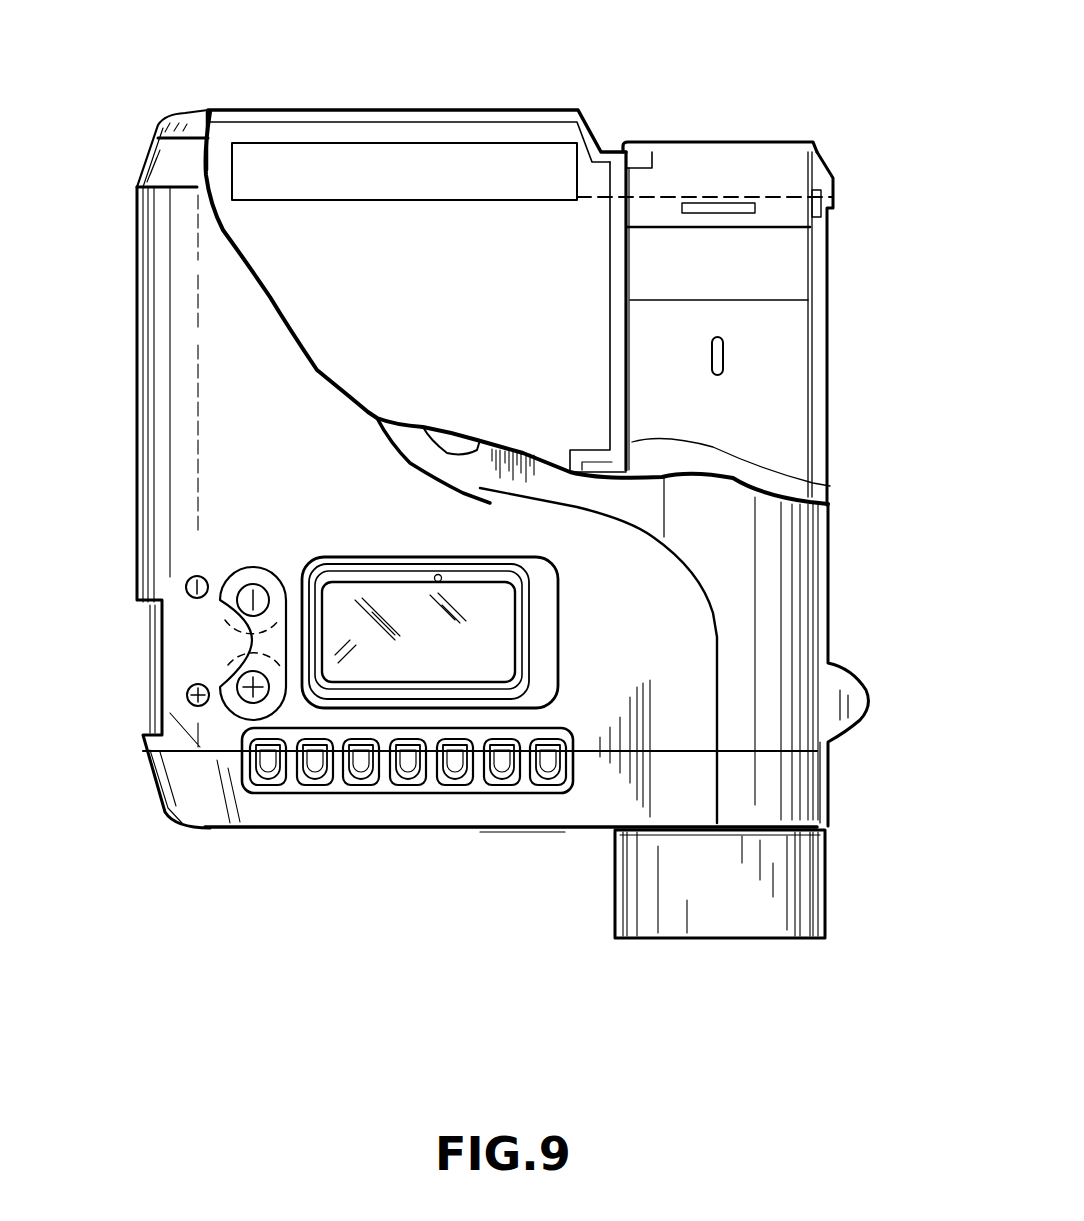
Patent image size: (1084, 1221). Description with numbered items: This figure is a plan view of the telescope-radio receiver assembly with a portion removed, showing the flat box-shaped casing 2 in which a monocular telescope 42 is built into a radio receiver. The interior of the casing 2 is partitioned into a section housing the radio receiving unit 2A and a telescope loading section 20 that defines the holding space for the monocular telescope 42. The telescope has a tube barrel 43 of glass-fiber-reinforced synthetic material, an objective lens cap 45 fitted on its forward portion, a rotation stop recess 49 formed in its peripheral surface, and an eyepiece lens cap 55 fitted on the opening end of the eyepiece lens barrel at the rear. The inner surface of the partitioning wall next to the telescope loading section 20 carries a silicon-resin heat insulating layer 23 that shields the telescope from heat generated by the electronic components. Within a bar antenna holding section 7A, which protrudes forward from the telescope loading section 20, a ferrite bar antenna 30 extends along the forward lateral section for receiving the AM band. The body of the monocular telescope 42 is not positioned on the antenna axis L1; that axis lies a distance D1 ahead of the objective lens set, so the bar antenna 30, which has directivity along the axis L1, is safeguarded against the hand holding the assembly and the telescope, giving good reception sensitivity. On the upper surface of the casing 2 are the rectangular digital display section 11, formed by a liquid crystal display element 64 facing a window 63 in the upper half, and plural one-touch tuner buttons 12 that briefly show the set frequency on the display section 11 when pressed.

The casing 2 is at (397, 812).
The radio receiving unit 2A is at (316, 273).
The bar antenna holding section 7A is at (450, 133).
The ferrite bar antenna 30 is at (318, 157).
The monocular telescope 42 is at (820, 443).
The objective lens cap 45 is at (797, 140).
The axis L1 is at (660, 197).
The distance D1 is at (857, 175).
The telescope loading section 20 is at (816, 285).
The tube barrel 43 is at (790, 337).
The rotation stop recess 49 is at (725, 360).
The heat insulating layer 23 is at (830, 486).
The display element 64 is at (485, 650).
The window 63 is at (438, 574).
The digital display section 11 is at (343, 612).
The one-touch tuner buttons 12 is at (263, 787).
The eyepiece lens cap 55 is at (737, 920).